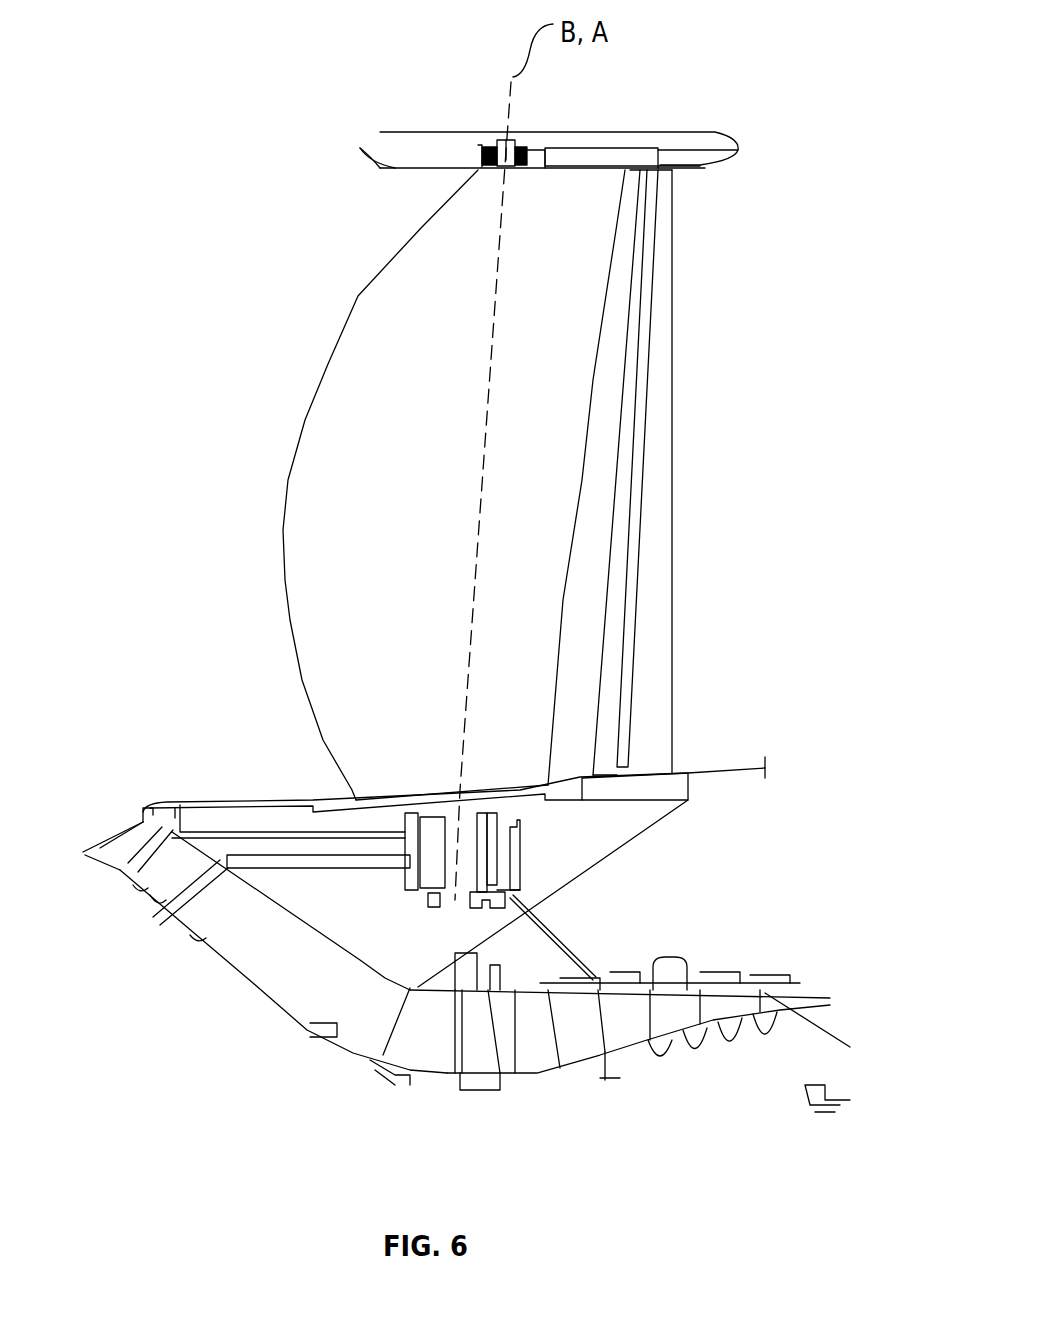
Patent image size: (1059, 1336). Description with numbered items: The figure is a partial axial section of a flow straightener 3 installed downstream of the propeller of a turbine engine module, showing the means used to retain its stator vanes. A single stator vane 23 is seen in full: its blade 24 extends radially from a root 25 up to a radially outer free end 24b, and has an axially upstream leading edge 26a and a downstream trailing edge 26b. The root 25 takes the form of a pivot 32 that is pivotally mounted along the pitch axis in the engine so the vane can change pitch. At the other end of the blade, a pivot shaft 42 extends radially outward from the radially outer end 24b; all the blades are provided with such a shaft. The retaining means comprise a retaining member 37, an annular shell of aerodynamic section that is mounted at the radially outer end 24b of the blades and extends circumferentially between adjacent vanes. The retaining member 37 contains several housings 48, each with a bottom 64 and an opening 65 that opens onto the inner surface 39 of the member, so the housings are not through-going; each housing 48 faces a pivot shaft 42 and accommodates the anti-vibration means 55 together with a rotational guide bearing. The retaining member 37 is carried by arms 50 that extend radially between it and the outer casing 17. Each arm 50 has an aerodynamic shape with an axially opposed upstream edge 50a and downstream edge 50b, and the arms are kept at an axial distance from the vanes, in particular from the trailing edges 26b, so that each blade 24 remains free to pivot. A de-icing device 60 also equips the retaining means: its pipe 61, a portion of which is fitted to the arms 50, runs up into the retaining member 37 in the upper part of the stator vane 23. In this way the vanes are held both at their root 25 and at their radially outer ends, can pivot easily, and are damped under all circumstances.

The flow straightener 3 is at (163, 232).
The outer casing 17 is at (736, 768).
The stator vane 23 is at (305, 298).
The blade 24 is at (323, 418).
The radially outer free end 24b is at (602, 168).
The root 25 is at (533, 865).
The leading edge 26a is at (287, 506).
The trailing edge 26b is at (572, 575).
The pivot 32 is at (445, 905).
The retaining member 37 is at (708, 155).
The inner surface 39 is at (383, 170).
The pivot shaft 42 is at (533, 153).
The housing 48 is at (537, 153).
The arm 50 is at (686, 405).
The upstream edge 50a is at (616, 492).
The downstream edge 50b is at (674, 288).
The anti-vibration means 55 is at (483, 167).
The de-icing device 60 is at (652, 470).
The pipe 61 is at (655, 220).
The bottom 64 is at (486, 147).
The opening 65 is at (553, 166).